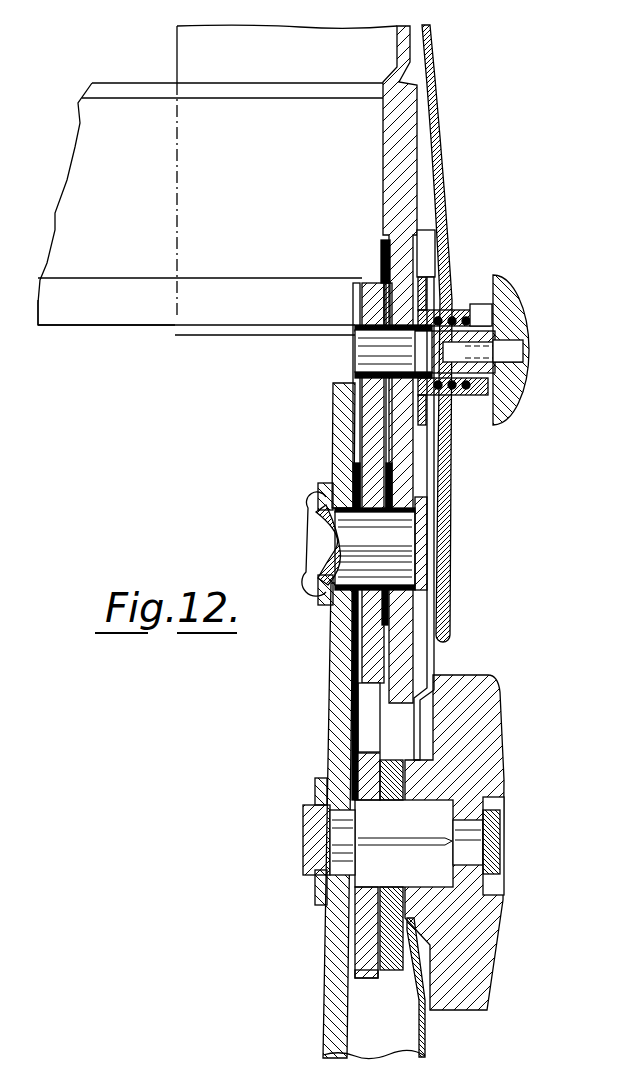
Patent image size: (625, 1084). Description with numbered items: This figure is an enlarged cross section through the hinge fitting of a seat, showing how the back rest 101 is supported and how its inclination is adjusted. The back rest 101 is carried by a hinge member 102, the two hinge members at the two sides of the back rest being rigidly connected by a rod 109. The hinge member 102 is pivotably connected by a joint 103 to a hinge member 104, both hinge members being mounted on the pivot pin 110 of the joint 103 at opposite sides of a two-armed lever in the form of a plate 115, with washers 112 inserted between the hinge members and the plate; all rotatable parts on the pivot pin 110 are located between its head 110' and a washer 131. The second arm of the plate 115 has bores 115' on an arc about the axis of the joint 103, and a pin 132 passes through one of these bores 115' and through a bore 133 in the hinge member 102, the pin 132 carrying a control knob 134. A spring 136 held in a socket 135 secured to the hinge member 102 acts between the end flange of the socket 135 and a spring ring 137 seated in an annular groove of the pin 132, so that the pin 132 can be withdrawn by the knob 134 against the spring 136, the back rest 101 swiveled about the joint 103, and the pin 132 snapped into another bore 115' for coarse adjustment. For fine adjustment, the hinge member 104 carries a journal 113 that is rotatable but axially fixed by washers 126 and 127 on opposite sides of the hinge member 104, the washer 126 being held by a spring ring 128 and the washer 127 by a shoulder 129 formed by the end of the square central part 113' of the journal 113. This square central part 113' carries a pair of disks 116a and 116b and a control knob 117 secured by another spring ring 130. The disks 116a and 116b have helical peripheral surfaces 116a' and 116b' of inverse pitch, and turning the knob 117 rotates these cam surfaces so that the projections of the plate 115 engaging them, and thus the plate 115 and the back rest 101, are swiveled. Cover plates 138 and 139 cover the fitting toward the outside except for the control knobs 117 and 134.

The back rest 101 is at (185, 62).
The rod 109 is at (105, 313).
The hinge member 102 is at (410, 145).
The cover plate 138 is at (442, 183).
The cover plate 139 is at (428, 660).
The plate 115 is at (330, 517).
The bores 115' is at (333, 269).
The bore 133 is at (400, 298).
The spring ring 137 is at (362, 392).
The hinge member 104 is at (338, 703).
The washers 112 is at (352, 478).
The pin 132 is at (365, 350).
The spring 136 is at (460, 392).
The socket 135 is at (473, 298).
The control knob 134 is at (510, 315).
The pivot pin 110 is at (414, 548).
The head 110' is at (456, 543).
The joint 103 is at (292, 545).
The washer 131 is at (330, 486).
The control knob 117 is at (478, 717).
The central part 113' is at (457, 818).
The journal 113 is at (504, 842).
The spring ring 130 is at (497, 817).
The shoulder 129 is at (358, 812).
The spring ring 128 is at (312, 795).
The washer 126 is at (318, 888).
The washer 127 is at (350, 775).
The disk 116b is at (469, 865).
The disk 116a is at (314, 932).
The helical peripheral surface 116a' is at (311, 1000).
The helical peripheral surface 116b' is at (444, 987).